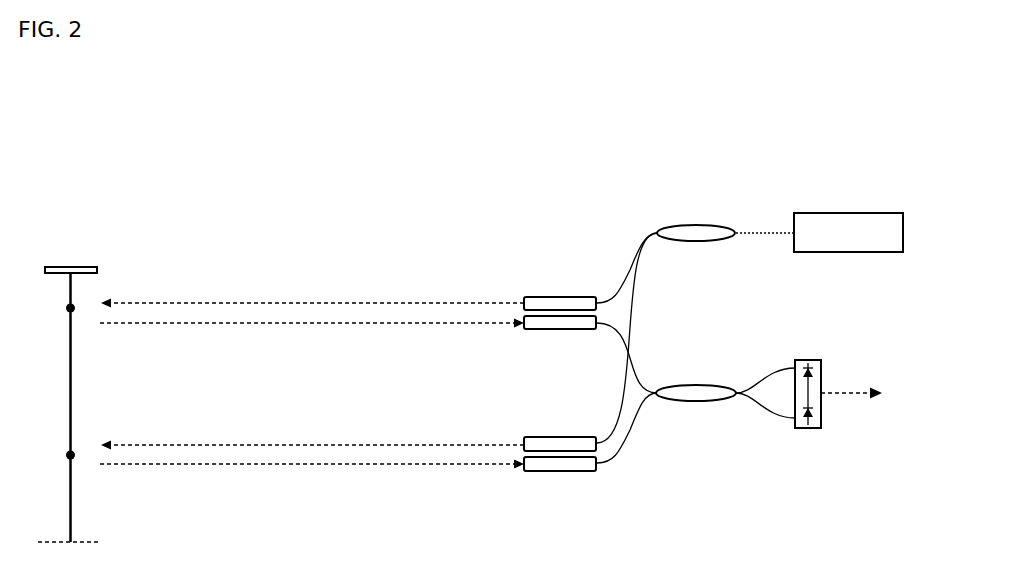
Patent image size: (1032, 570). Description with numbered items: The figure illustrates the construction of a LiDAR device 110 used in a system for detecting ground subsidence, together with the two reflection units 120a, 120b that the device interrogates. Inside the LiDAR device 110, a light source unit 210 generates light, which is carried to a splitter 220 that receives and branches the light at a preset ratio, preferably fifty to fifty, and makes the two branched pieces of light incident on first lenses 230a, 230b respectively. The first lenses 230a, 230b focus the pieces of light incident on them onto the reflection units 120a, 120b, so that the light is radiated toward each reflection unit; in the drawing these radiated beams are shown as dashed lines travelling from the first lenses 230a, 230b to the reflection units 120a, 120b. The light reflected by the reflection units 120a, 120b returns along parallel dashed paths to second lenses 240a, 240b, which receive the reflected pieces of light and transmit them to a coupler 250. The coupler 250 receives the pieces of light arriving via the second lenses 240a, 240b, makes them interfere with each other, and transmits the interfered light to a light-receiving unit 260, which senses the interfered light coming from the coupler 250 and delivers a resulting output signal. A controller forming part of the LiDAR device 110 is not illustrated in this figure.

The LiDAR device 110 is at (502, 112).
The reflection unit 120a is at (73, 306).
The reflection unit 120b is at (74, 458).
The light source unit 210 is at (847, 213).
The splitter 220 is at (696, 231).
The first lens 230a is at (577, 297).
The first lens 230b is at (577, 437).
The second lens 240a is at (524, 320).
The second lens 240b is at (524, 462).
The coupler 250 is at (697, 395).
The light-receiving unit 260 is at (812, 428).